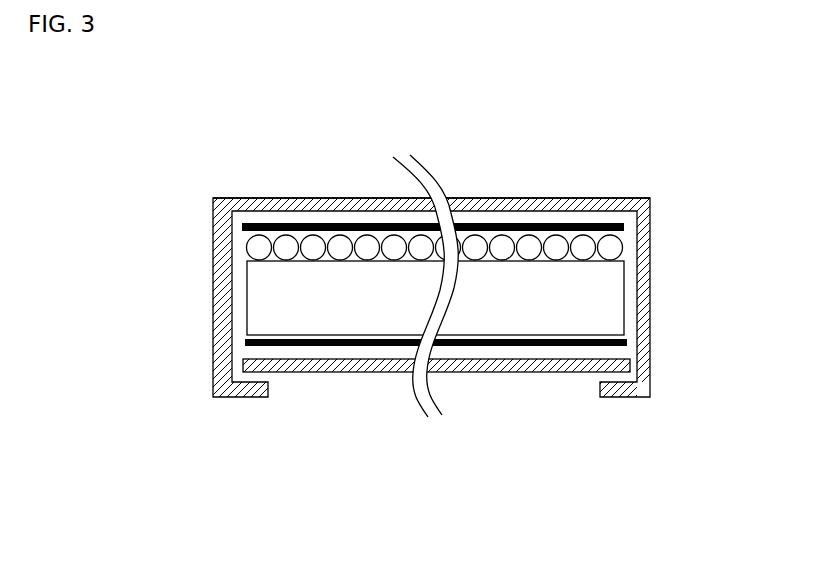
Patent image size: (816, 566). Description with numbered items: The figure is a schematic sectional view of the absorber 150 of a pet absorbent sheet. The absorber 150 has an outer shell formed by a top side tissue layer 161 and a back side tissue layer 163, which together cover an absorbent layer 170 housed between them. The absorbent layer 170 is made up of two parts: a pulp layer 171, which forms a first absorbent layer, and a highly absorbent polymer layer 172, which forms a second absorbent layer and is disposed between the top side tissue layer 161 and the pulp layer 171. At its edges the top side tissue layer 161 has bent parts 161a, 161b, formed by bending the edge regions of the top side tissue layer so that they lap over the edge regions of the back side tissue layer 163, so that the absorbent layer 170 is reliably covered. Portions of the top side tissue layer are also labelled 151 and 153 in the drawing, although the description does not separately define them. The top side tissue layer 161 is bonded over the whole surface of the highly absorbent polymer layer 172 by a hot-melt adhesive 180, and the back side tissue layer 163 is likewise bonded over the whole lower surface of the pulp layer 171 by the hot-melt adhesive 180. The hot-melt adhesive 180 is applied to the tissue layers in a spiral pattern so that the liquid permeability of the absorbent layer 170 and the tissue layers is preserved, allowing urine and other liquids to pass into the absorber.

The absorber 150 is at (679, 189).
The front frame portion 151 is at (463, 194).
The top wall portion 153 is at (554, 194).
The top side tissue layer 161 is at (630, 192).
The bent part 161a is at (228, 400).
The bent part 161b is at (637, 391).
The back side tissue layer 163 is at (513, 365).
The absorbent layer 170 is at (680, 280).
The pulp layer 171 is at (606, 311).
The highly absorbent polymer layer 172 is at (621, 238).
The hot-melt adhesive 180 is at (272, 225).